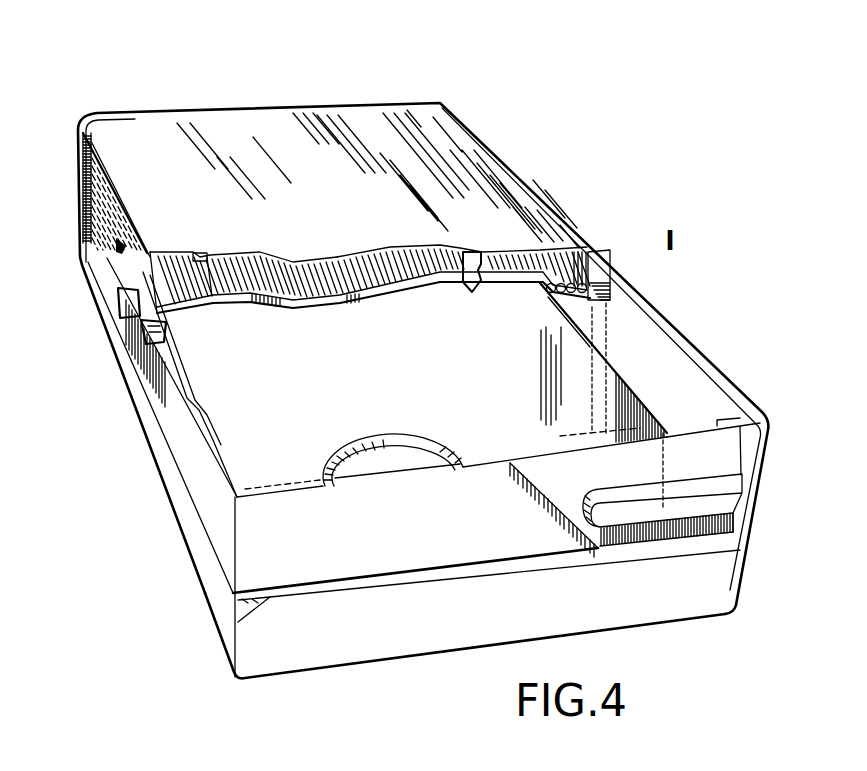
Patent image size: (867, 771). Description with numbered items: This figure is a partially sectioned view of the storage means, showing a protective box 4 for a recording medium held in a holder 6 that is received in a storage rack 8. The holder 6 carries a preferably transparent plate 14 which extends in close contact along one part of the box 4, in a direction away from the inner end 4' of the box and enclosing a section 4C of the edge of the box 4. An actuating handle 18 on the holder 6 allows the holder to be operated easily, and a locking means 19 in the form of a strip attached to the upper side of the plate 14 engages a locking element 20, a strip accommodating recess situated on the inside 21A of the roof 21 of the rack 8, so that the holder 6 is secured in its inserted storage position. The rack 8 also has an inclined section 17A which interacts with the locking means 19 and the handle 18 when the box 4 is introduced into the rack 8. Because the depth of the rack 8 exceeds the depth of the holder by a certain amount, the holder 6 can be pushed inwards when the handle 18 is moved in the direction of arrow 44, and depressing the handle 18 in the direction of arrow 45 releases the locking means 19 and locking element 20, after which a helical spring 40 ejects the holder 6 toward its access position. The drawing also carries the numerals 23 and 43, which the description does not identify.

The protective box 4 is at (392, 557).
The inner end of the box 4' is at (629, 344).
The section of the edge of the box 4C is at (640, 400).
The holder 6 is at (637, 550).
The storage rack 8 is at (385, 655).
The transparent plate 14 is at (125, 249).
The inclined section of the rack 17A is at (152, 250).
The actuating handle 18 is at (120, 227).
The locking means 19 is at (207, 257).
The locking element 20 is at (192, 257).
The roof of the rack 21 is at (452, 187).
The inside of the roof 21A is at (385, 243).
The handle 23 is at (683, 503).
The helical spring 40 is at (592, 252).
The retaining clip 43 is at (475, 255).
The arrow 44 is at (130, 298).
The arrow 45 is at (170, 330).